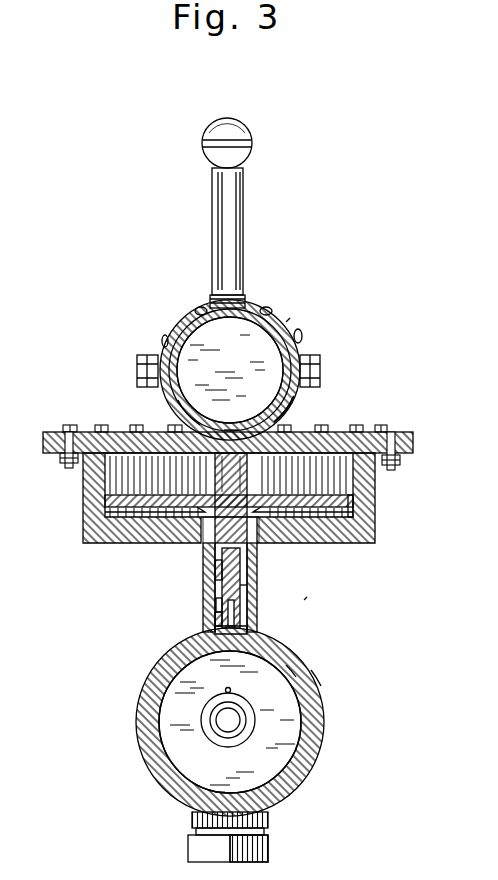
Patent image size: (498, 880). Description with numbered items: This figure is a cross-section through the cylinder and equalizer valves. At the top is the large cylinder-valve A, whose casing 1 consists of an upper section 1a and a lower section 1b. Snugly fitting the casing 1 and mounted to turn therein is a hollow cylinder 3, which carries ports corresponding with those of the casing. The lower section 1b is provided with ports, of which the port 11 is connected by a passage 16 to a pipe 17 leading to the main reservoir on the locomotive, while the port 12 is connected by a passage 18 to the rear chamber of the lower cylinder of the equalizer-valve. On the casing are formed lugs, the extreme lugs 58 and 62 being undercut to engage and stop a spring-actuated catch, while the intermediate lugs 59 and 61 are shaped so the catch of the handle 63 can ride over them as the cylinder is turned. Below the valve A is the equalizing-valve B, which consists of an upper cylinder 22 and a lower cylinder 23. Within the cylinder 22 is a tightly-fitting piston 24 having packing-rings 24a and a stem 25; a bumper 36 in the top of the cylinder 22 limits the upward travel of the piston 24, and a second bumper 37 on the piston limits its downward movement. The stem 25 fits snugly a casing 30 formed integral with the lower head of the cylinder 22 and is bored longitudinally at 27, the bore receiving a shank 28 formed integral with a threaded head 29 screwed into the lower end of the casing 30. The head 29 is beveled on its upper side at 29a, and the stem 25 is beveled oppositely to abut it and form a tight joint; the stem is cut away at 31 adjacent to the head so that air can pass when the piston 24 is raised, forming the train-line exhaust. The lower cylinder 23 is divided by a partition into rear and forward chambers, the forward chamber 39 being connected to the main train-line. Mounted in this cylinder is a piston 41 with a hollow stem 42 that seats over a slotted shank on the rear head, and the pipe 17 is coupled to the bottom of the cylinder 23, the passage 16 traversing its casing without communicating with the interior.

The handle 63 is at (243, 257).
The lug 61 is at (199, 312).
The casing 1 is at (228, 370).
The lug 62 is at (161, 340).
The lug 59 is at (278, 307).
The large cylinder-valve A is at (294, 311).
The lug 58 is at (302, 336).
The upper casing section 1a is at (299, 348).
The lower casing section 1b is at (299, 401).
The hollow cylinder 3 is at (230, 370).
The port 11 is at (205, 419).
The port 12 is at (243, 426).
The bumper 36 is at (232, 460).
The upper cylinder 22 is at (228, 486).
The piston 24 is at (252, 503).
The packing-rings 24a is at (356, 500).
The second bumper 37 is at (212, 516).
The stem 25 is at (258, 553).
The casing 30 is at (206, 578).
The shank 28 is at (250, 573).
The bore 27 is at (249, 585).
The equalizing-valve B is at (312, 589).
The bevel of head 29a is at (219, 605).
The cut-away portion of stem 31 is at (241, 606).
The threaded head 29 is at (258, 636).
The passage 18 is at (178, 659).
The passage 16 is at (288, 666).
The lower cylinder 23 is at (325, 671).
The hollow stem 42 is at (233, 714).
The piston 41 is at (241, 720).
The forward chamber 39 is at (230, 722).
The pipe 17 is at (264, 848).